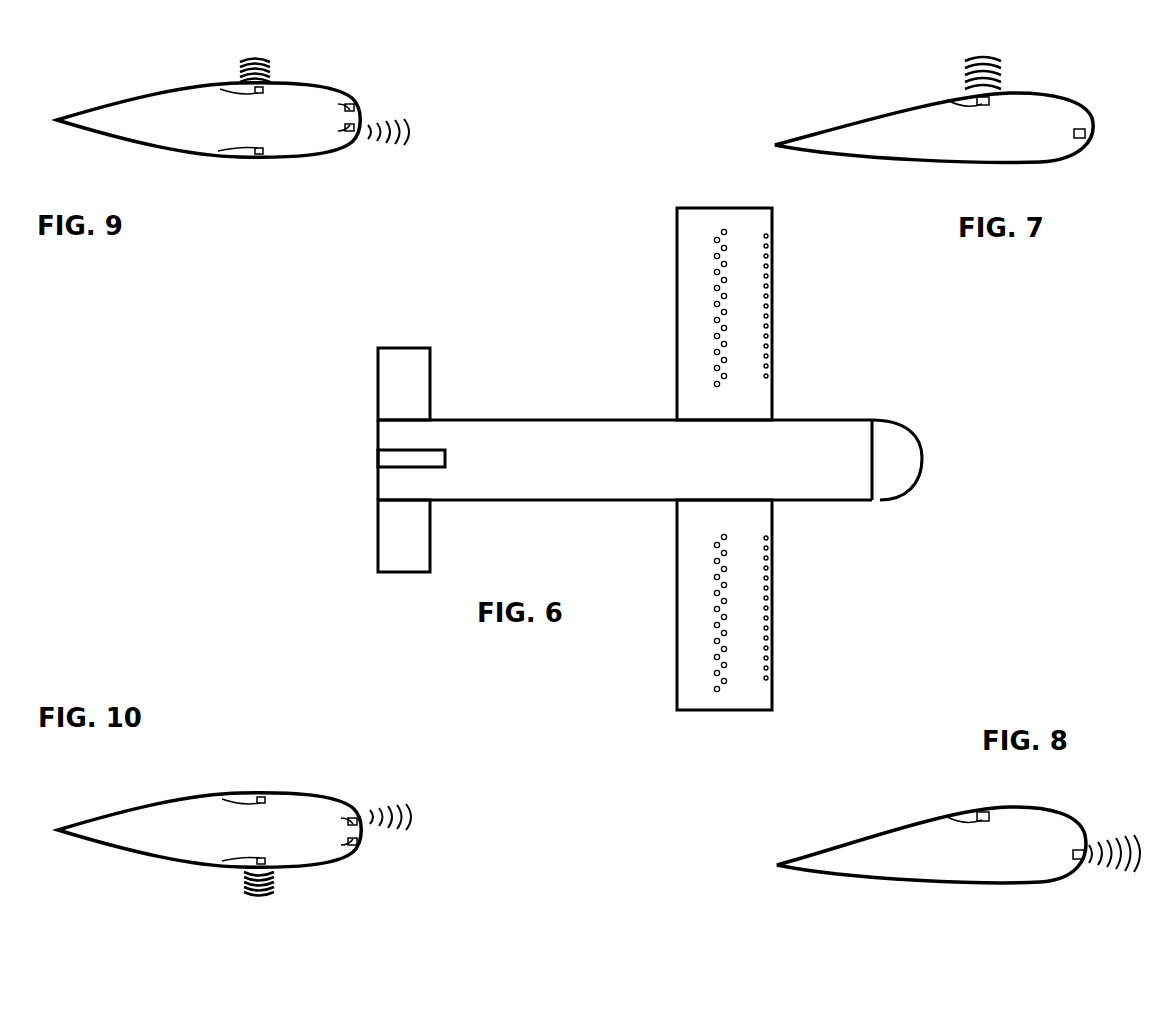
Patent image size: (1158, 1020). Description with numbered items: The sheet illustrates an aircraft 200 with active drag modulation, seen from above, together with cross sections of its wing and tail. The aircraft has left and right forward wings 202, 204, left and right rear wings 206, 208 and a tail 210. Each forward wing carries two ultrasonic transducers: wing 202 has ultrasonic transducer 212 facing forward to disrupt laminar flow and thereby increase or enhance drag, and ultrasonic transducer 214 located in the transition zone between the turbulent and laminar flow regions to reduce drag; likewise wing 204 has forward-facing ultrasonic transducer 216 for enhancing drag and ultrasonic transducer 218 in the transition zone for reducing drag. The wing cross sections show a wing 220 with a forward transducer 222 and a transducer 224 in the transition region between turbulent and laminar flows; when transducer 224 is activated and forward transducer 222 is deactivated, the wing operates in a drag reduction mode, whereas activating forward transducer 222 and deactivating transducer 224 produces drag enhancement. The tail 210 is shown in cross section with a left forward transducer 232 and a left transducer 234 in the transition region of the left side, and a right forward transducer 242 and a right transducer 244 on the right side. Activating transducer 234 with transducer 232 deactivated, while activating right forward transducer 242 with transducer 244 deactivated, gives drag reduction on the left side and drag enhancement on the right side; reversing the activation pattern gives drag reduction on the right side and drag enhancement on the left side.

In FIG. 6, the aircraft 200 is at (605, 474).
In FIG. 6, the left forward wing 202 is at (677, 385).
In FIG. 6, the right forward wing 204 is at (677, 537).
In FIG. 6, the left rear wing 206 is at (378, 363).
In FIG. 6, the right rear wing 208 is at (378, 528).
In FIG. 9, the tail 210 is at (182, 134).
In FIG. 10, the tail 210 is at (185, 846).
In FIG. 6, the tail 210 is at (378, 458).
In FIG. 6, the ultrasonic transducer 212 is at (767, 285).
In FIG. 6, the ultrasonic transducer 214 is at (717, 285).
In FIG. 6, the ultrasonic transducer 216 is at (768, 630).
In FIG. 6, the ultrasonic transducer 218 is at (717, 630).
In FIG. 7, the wing 220 is at (962, 144).
In FIG. 8, the wing 220 is at (925, 867).
In FIG. 7, the forward transducer 222 is at (1072, 130).
In FIG. 8, the forward transducer 222 is at (1072, 850).
In FIG. 7, the transducer 224 is at (943, 100).
In FIG. 8, the transducer 224 is at (945, 818).
In FIG. 9, the left forward transducer 232 is at (340, 106).
In FIG. 10, the left forward transducer 232 is at (350, 823).
In FIG. 9, the transducer 234 is at (197, 88).
In FIG. 10, the transducer 234 is at (197, 800).
In FIG. 9, the right forward transducer 242 is at (342, 130).
In FIG. 10, the right forward transducer 242 is at (350, 840).
In FIG. 9, the transducer 244 is at (197, 153).
In FIG. 10, the transducer 244 is at (200, 863).